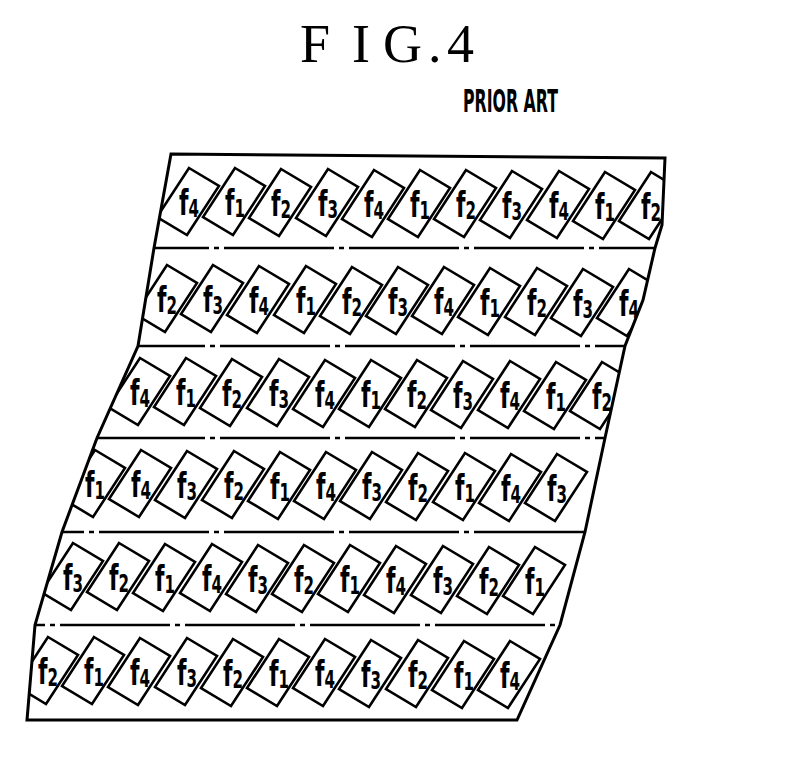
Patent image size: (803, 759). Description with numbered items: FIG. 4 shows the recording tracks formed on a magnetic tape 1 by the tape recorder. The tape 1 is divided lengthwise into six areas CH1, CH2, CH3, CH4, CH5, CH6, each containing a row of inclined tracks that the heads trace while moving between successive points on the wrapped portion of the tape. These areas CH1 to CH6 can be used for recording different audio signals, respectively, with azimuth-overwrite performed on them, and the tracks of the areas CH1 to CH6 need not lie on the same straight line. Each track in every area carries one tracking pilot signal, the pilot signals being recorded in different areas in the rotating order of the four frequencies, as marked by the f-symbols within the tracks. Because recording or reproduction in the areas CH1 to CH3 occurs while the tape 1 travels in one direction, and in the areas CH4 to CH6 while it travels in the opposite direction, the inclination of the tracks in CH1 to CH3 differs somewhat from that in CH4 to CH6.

The magnetic tape 1 is at (261, 155).
The audio signal recording area CH1 is at (520, 685).
The audio signal recording area CH2 is at (570, 582).
The audio signal recording area CH3 is at (590, 490).
The audio signal recording area CH4 is at (613, 398).
The audio signal recording area CH5 is at (643, 305).
The audio signal recording area CH6 is at (665, 221).